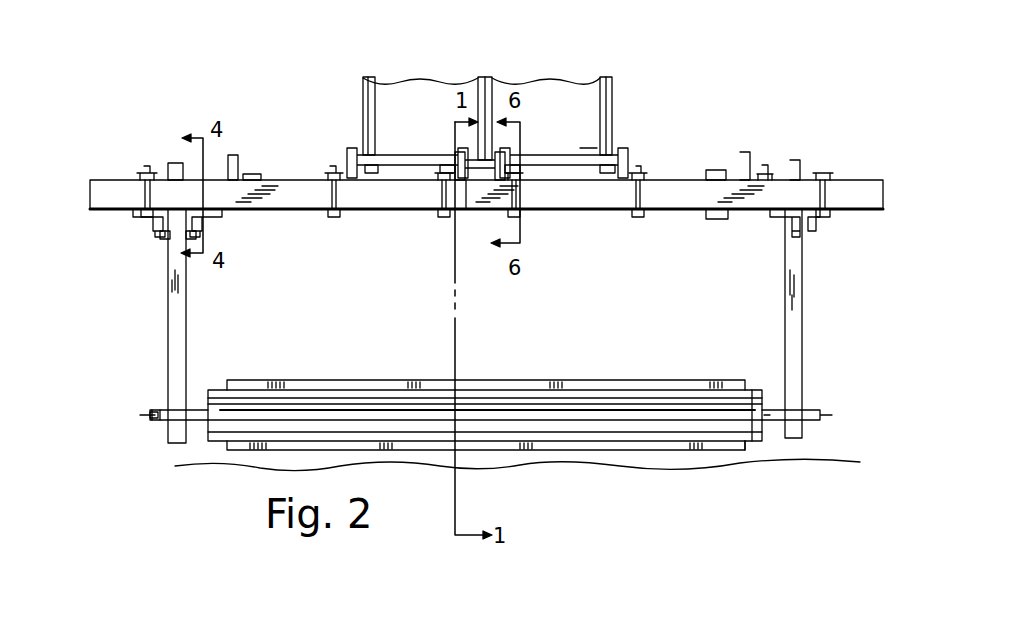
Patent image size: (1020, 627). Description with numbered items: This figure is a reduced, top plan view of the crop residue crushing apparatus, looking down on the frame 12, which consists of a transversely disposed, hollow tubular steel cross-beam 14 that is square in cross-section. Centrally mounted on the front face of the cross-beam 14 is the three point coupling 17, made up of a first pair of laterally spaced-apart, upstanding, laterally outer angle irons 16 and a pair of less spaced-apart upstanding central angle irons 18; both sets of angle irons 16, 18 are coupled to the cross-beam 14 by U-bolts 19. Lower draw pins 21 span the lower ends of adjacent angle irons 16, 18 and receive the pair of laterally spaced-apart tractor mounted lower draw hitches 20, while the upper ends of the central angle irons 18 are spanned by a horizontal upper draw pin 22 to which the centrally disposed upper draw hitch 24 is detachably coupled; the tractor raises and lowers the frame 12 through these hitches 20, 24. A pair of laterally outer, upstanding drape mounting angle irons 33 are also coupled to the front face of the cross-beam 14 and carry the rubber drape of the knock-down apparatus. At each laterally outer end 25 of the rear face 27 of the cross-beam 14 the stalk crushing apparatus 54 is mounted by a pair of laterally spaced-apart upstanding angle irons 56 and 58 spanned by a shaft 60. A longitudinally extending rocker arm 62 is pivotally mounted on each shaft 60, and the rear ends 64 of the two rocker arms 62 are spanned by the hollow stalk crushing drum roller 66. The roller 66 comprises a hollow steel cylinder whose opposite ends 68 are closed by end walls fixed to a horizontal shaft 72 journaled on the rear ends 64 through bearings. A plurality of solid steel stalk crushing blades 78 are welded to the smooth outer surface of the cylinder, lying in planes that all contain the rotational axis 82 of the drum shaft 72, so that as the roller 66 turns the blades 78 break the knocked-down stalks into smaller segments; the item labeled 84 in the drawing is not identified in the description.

The frame 12 is at (710, 135).
The cross-beam 14 is at (90, 196).
The laterally outer angle irons 16 is at (350, 148).
The three point coupling 17 is at (352, 66).
The central angle irons 18 is at (456, 156).
The U-bolts 19 is at (330, 212).
The lower draw hitches 20 is at (368, 77).
The lower draw pins 21 is at (583, 150).
The upper draw pin 22 is at (468, 212).
The upper draw hitch 24 is at (485, 80).
The laterally outer end 25 is at (110, 180).
The rear face 27 is at (866, 212).
The drape mounting angle irons 33 is at (255, 172).
The stalk crushing apparatus 54 is at (818, 362).
The angle iron 56 is at (136, 215).
The angle iron 58 is at (214, 215).
The shaft 60 is at (162, 234).
The rocker arm 62 is at (187, 345).
The rear ends 64 is at (803, 432).
The stalk crushing drum roller 66 is at (688, 360).
The opposite ends 68 is at (752, 452).
The horizontal shaft 72 is at (152, 410).
The stalk crushing blades 78 is at (236, 452).
The rotational axis 82 is at (145, 417).
The upper plate 84 is at (722, 380).